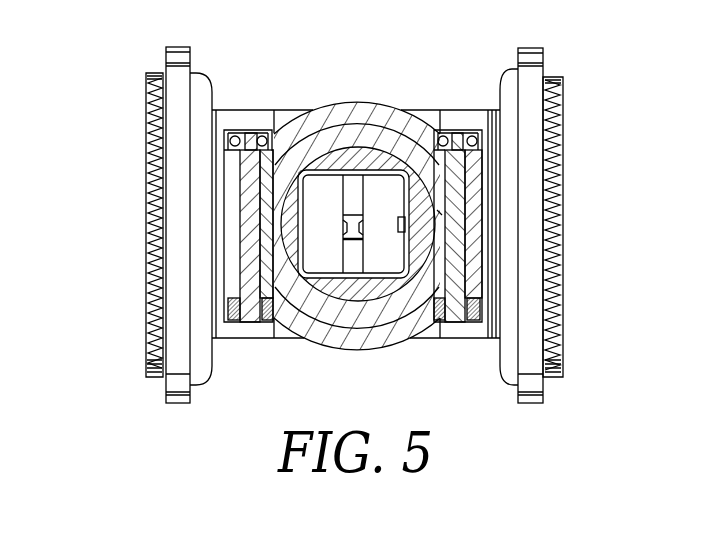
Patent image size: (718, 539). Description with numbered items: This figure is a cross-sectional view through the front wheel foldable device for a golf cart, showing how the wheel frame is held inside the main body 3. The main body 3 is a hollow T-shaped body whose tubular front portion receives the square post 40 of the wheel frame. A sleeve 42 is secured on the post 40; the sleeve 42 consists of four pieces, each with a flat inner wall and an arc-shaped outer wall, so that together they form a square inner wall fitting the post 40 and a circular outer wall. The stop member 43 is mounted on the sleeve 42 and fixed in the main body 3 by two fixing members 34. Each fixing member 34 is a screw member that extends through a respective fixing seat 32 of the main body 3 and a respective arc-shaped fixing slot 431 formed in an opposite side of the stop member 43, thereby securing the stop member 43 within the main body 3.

The main body 3 is at (362, 115).
The fixing seat 32 is at (473, 277).
The fixing member 34 is at (458, 175).
The square post 40 is at (300, 246).
The sleeve 42 is at (290, 211).
The stop member 43 is at (437, 243).
The fixing slot 431 is at (427, 218).